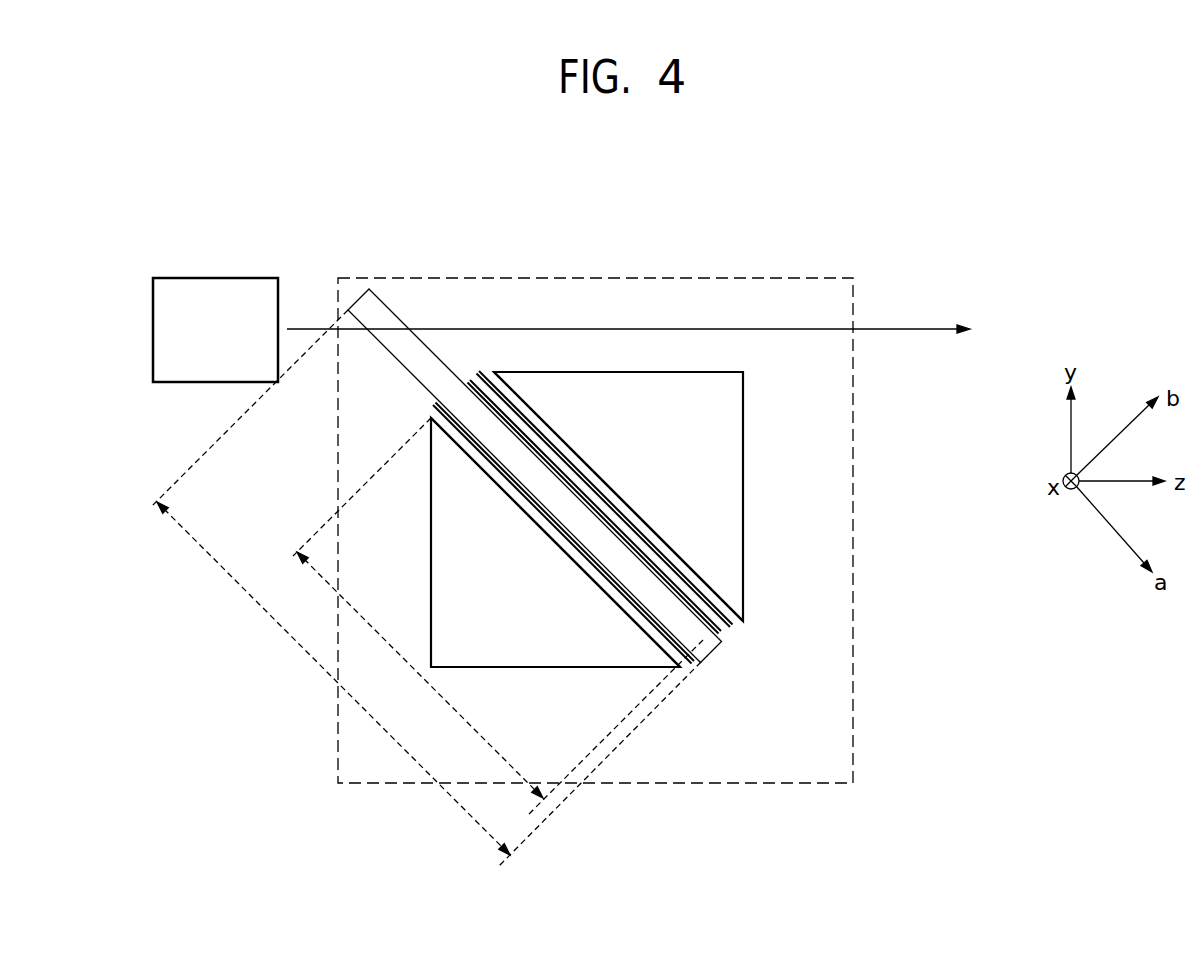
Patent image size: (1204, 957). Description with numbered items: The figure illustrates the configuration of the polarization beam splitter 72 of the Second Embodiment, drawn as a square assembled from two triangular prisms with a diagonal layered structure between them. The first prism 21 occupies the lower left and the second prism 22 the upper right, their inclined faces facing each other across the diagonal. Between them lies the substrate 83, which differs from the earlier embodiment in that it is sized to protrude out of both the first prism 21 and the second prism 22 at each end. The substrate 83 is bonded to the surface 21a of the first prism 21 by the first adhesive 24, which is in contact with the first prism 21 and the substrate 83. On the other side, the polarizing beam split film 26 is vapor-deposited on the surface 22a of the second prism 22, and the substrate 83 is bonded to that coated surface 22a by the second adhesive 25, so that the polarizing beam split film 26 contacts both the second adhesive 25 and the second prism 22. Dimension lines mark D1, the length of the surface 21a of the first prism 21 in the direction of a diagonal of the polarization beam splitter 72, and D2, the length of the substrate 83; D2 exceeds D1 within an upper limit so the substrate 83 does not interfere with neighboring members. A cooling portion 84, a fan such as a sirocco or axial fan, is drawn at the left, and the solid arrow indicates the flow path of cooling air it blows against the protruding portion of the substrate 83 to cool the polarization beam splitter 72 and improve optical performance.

The cooling portion 84 is at (237, 277).
The polarization beam splitter 72 is at (855, 425).
The first prism 21 is at (507, 667).
The surface of the first prism 21a is at (570, 557).
The second prism 22 is at (745, 492).
The surface of the second prism 22a is at (585, 462).
The substrate 83 is at (712, 657).
The first adhesive 24 is at (433, 410).
The second adhesive 25 is at (472, 378).
The polarizing beam split film 26 is at (732, 628).
The length of the surface of the first prism D1 is at (408, 662).
The length of the substrate D2 is at (265, 610).